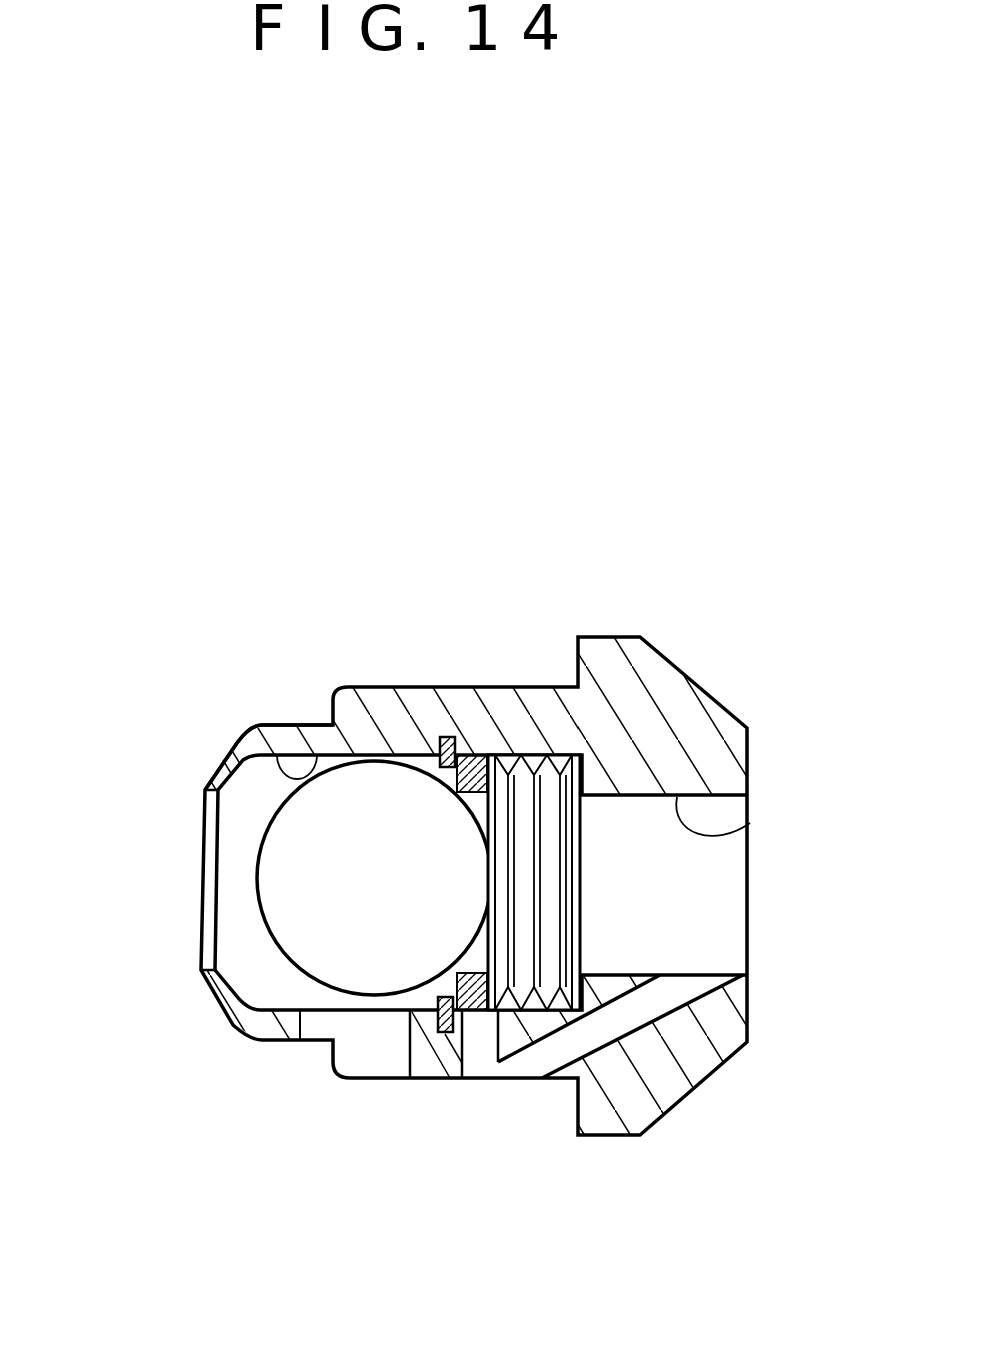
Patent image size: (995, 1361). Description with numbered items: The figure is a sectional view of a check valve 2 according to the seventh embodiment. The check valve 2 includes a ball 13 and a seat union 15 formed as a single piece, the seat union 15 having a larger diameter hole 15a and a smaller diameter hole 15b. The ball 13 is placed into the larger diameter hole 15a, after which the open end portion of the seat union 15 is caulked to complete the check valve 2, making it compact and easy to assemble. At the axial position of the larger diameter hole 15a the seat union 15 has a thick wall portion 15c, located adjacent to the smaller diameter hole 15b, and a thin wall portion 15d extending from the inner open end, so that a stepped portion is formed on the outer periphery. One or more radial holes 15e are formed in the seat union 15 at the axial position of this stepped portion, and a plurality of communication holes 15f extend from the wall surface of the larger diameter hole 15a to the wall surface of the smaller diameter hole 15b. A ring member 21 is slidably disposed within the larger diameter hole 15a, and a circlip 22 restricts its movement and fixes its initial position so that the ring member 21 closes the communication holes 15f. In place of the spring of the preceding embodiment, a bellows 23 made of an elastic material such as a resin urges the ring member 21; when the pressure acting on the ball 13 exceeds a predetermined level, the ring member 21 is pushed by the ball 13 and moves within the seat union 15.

The check valve 2 is at (425, 403).
The ball 13 is at (293, 887).
The seat union 15 is at (693, 1068).
The larger diameter hole 15a is at (271, 752).
The smaller diameter hole 15b is at (748, 827).
The thick wall portion 15c is at (383, 710).
The thin wall portion 15d is at (237, 750).
The radial hole 15e is at (347, 1037).
The communication hole 15f is at (485, 1065).
The ring member 21 is at (477, 752).
The circlip 22 is at (437, 1043).
The bellows 23 is at (547, 800).